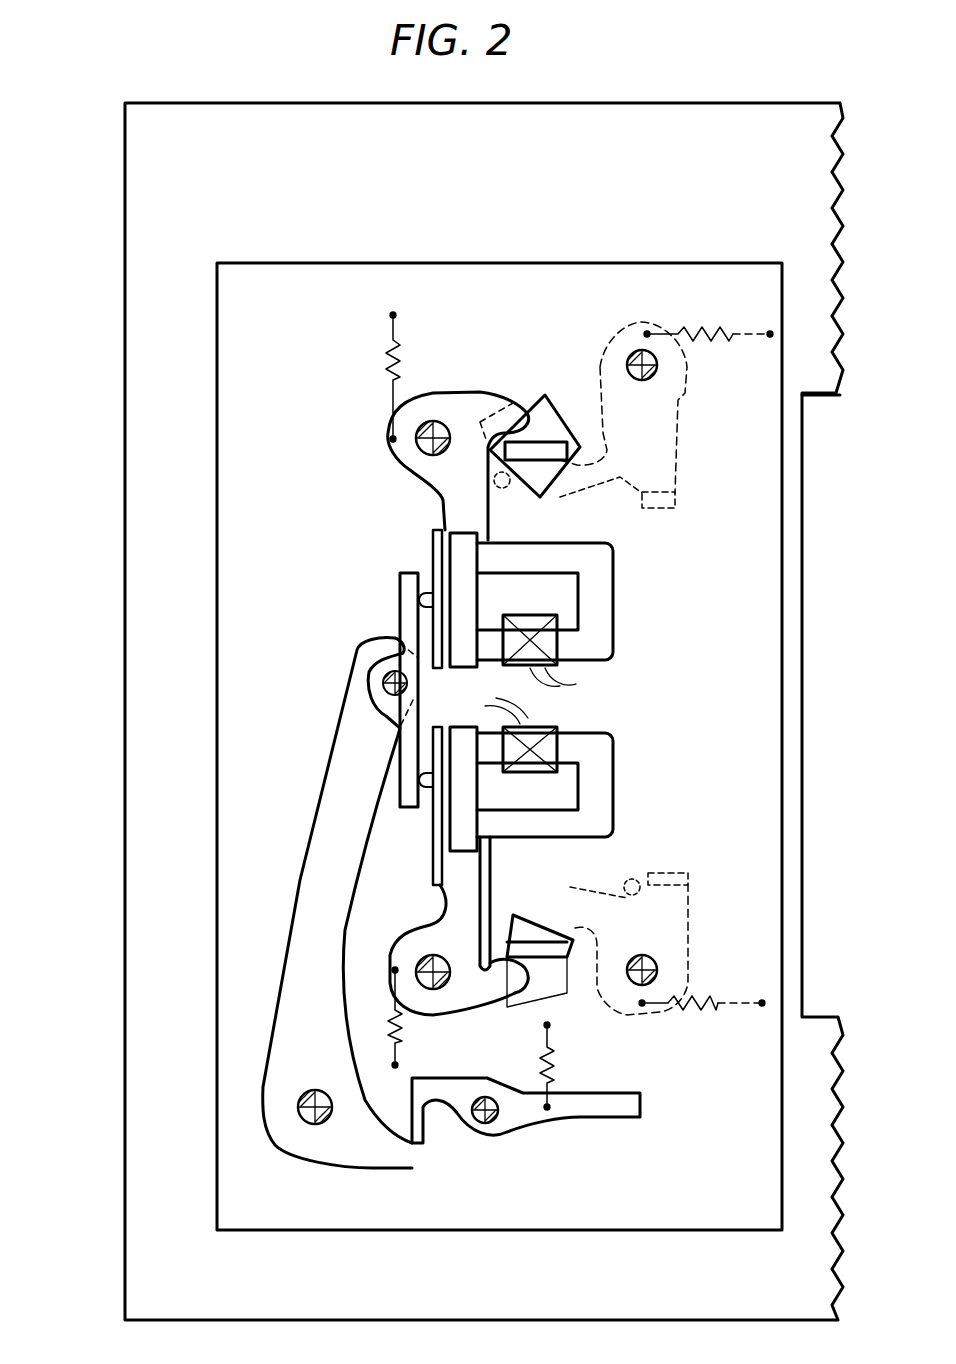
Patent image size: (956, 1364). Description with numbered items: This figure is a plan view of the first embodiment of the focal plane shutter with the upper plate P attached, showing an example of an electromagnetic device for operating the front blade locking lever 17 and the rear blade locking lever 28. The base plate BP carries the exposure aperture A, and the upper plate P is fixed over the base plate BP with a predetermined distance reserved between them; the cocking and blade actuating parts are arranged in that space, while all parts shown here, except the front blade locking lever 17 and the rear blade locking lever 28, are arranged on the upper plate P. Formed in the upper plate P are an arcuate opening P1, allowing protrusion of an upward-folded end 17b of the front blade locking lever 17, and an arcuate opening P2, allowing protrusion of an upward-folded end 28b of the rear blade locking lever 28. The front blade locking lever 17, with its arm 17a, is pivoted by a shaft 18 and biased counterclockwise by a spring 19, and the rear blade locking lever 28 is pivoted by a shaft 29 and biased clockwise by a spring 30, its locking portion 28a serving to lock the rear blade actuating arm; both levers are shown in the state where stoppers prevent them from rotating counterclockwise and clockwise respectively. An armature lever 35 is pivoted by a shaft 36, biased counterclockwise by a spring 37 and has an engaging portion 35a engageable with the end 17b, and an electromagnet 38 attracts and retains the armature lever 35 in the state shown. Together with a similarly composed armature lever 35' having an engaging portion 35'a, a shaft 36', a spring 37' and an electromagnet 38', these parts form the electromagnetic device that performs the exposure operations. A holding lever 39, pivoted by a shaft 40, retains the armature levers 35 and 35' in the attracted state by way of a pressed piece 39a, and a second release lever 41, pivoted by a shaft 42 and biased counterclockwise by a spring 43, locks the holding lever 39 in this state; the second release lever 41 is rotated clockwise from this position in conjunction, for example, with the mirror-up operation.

The base plate BP is at (125, 1262).
The upper plate P is at (337, 263).
The exposure aperture A is at (826, 398).
The front blade locking lever 17 is at (693, 943).
The contact lever arm 17a is at (675, 873).
The upward-folded end of the front blade locking lever 17b is at (543, 947).
The shaft 18 is at (650, 955).
The spring 19 is at (710, 993).
The rear blade locking lever 28 is at (682, 397).
The locking portion 28a is at (660, 508).
The upward-folded end of the rear blade locking lever 28b is at (545, 440).
The shaft 29 is at (627, 357).
The spring 30 is at (733, 327).
The armature lever 35 is at (436, 926).
The engaging portion 35a is at (515, 1000).
The armature lever 35' is at (428, 466).
The engaging portion 35'a is at (506, 379).
The shaft 36 is at (448, 946).
The shaft 36' is at (437, 391).
The spring 37 is at (433, 1017).
The spring 37' is at (351, 377).
The electromagnet 38 is at (523, 791).
The electromagnet 38' is at (523, 608).
The holding lever 39 is at (317, 793).
The pressed piece 39a is at (400, 598).
The shaft 40 is at (300, 1117).
The second release lever 41 is at (645, 1105).
The shaft 42 is at (497, 1117).
The spring 43 is at (557, 1078).
The arcuate opening P1 is at (560, 990).
The arcuate opening P2 is at (552, 427).